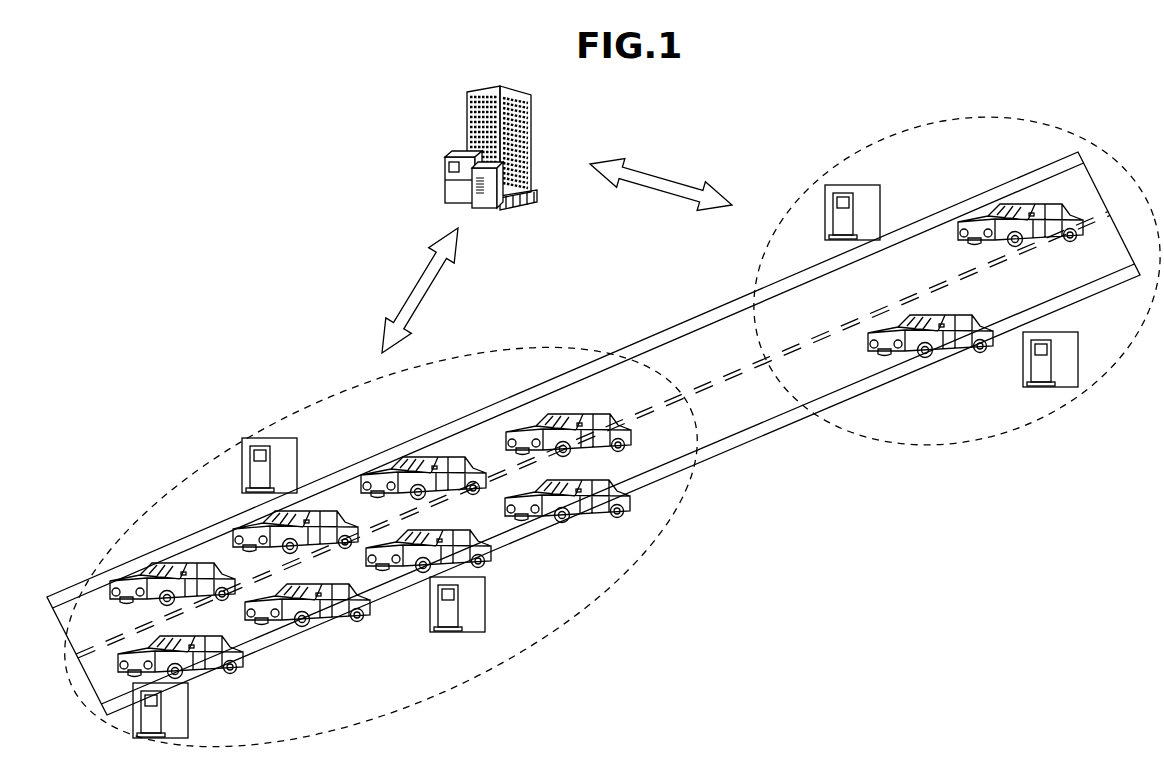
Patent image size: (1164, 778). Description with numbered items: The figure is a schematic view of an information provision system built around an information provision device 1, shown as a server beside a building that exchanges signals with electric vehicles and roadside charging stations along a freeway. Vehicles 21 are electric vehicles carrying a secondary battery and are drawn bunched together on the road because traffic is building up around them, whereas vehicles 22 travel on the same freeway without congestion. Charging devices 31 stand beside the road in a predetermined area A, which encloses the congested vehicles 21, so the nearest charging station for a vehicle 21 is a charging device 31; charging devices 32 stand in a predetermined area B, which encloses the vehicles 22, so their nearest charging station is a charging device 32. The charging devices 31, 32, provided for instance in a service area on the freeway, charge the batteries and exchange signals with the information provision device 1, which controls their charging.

The information provision device 1 is at (437, 121).
The vehicle 21 is at (185, 518).
The vehicle 22 is at (1033, 205).
The charging device 31 is at (265, 438).
The charging device 32 is at (850, 185).
The area A is at (640, 575).
The area B is at (1082, 398).